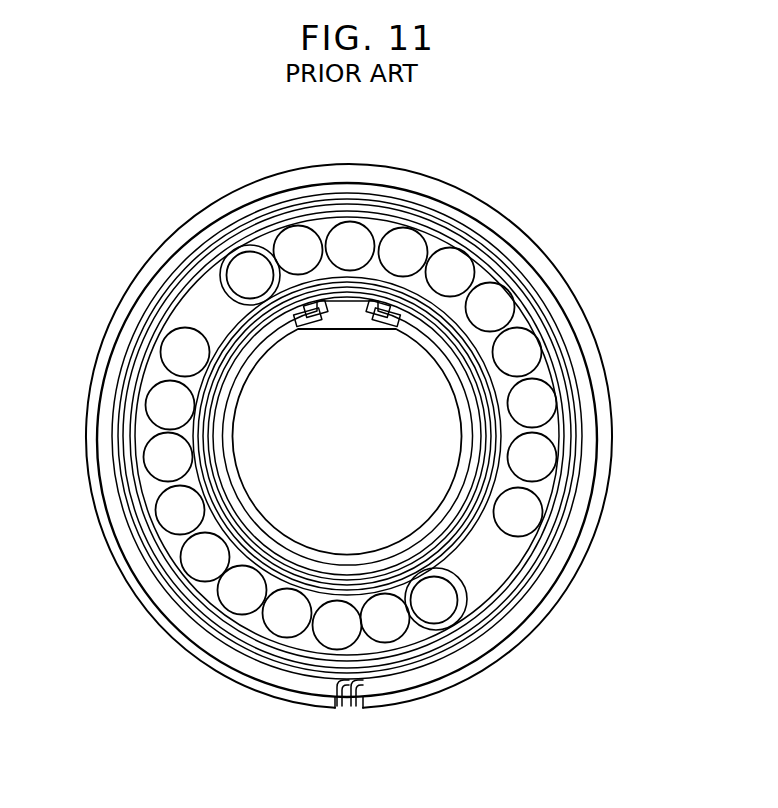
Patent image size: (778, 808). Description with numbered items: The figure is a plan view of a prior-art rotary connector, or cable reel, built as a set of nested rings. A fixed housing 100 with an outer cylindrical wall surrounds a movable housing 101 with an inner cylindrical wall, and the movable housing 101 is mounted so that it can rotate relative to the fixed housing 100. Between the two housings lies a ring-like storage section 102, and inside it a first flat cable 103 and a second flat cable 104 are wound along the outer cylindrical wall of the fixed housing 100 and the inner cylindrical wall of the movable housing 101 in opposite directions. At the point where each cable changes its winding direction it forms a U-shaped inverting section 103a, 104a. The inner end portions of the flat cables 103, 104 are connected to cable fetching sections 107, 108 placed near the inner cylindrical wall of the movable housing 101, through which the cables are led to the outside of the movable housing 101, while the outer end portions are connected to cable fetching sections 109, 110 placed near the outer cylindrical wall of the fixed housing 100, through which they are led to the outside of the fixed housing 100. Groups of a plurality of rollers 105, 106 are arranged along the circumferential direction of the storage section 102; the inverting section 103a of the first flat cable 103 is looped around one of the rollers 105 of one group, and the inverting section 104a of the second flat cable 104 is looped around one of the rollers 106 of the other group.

The fixed housing 100 is at (560, 290).
The movable housing 101 is at (455, 502).
The ring-like storage section 102 is at (493, 560).
The first flat cable 103 is at (428, 635).
The inverting section 103a is at (478, 600).
The second flat cable 104 is at (257, 233).
The inverting section 104a is at (217, 283).
The rollers 105 is at (207, 551).
The rollers 106 is at (553, 387).
The cable fetching section 107 is at (310, 330).
The cable fetching section 108 is at (378, 330).
The cable fetching section 109 is at (355, 706).
The cable fetching section 110 is at (336, 706).